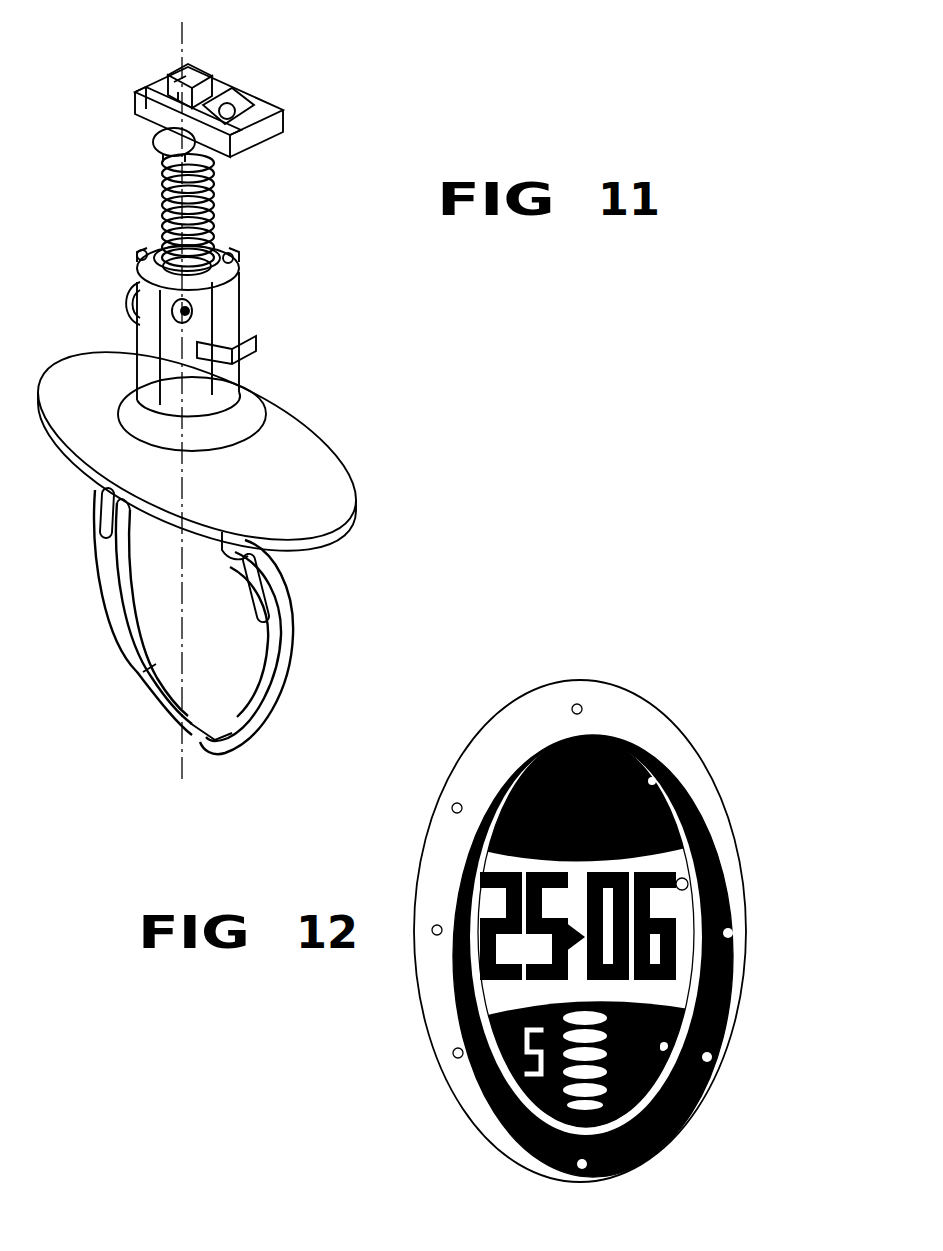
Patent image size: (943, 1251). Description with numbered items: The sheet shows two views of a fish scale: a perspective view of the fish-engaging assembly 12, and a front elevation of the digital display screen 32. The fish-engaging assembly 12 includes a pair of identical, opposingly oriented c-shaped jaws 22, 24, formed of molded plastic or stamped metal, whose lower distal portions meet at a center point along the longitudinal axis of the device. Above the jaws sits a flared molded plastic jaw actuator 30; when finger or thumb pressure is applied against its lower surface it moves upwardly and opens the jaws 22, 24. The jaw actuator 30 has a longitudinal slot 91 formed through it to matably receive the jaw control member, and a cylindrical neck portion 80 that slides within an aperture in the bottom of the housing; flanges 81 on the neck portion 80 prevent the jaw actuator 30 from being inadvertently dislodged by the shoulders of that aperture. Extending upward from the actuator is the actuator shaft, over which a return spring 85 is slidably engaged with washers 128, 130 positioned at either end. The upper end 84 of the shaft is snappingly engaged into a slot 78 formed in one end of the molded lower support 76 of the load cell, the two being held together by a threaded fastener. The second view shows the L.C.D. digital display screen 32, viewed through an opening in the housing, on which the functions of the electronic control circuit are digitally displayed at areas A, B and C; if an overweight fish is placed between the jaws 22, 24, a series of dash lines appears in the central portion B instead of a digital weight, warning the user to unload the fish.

In FIG. 11, the upper end of actuator shaft 84 is at (192, 90).
In FIG. 11, the slot 78 is at (156, 92).
In FIG. 11, the washer 128 is at (152, 143).
In FIG. 11, the lower support 76 is at (253, 134).
In FIG. 11, the return spring 85 is at (218, 212).
In FIG. 11, the washer 130 is at (155, 262).
In FIG. 11, the longitudinal slot 91 is at (230, 278).
In FIG. 11, the cylindrical neck portion 80 is at (246, 305).
In FIG. 11, the flanges 81 is at (258, 348).
In FIG. 11, the fish-engaging assembly 12 is at (262, 375).
In FIG. 11, the jaw actuator 30 is at (332, 460).
In FIG. 11, the jaw 22 is at (99, 597).
In FIG. 11, the jaw 24 is at (288, 623).
In FIG. 12, the digital display screen 32 is at (515, 988).
In FIG. 12, the display area A is at (658, 781).
In FIG. 12, the central portion of display B is at (689, 884).
In FIG. 12, the display area C is at (670, 1046).